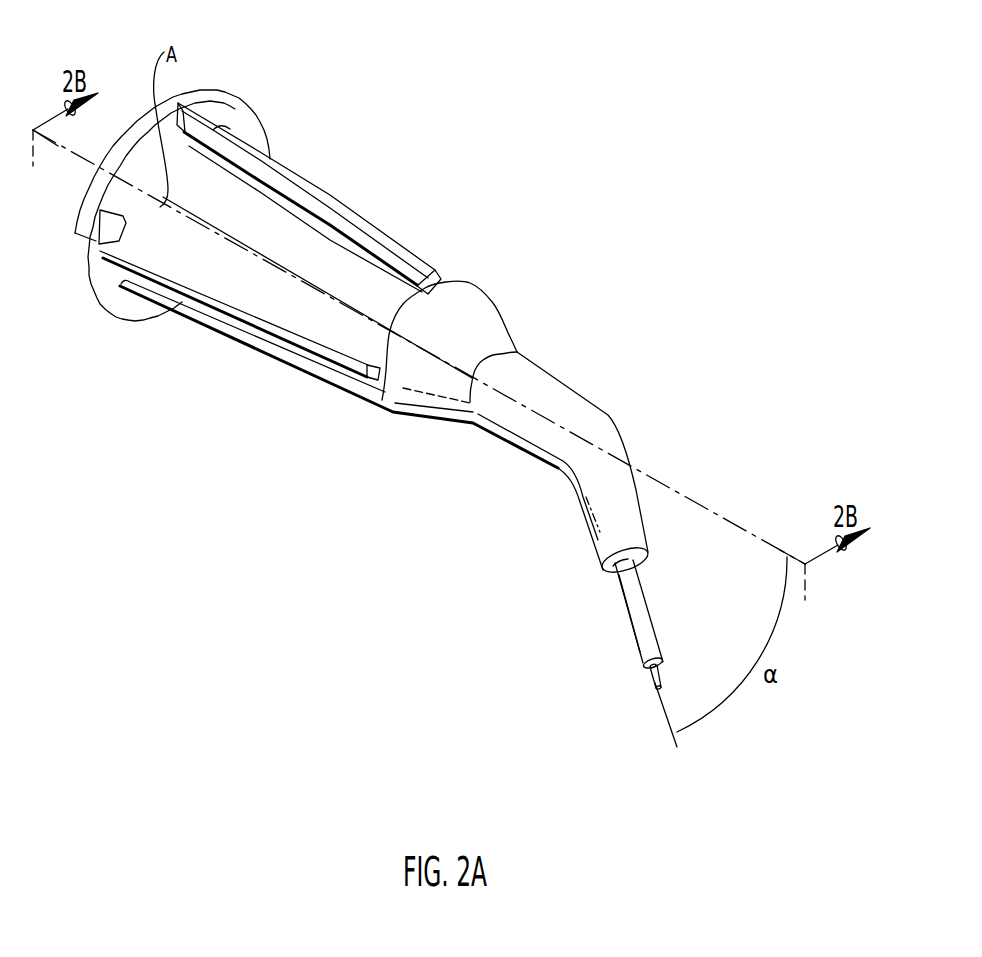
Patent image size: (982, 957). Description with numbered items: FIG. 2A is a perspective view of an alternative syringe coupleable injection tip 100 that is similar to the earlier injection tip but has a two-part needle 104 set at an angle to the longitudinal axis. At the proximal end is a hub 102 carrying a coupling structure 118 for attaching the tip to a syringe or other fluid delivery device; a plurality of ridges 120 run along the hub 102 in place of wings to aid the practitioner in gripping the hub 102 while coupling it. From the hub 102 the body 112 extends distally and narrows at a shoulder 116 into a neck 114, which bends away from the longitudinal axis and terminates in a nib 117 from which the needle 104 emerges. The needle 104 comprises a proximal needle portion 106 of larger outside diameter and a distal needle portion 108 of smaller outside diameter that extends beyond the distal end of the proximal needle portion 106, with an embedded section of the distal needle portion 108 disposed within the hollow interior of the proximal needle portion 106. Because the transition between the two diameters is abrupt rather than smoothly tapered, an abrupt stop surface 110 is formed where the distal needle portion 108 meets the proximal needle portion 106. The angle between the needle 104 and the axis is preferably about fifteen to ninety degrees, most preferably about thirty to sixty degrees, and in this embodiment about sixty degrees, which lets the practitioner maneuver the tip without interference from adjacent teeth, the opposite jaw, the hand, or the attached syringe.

The injection tip 100 is at (576, 149).
The hub 102 is at (366, 170).
The two-part needle 104 is at (640, 560).
The proximal needle portion 106 is at (628, 613).
The distal needle portion 108 is at (652, 683).
The abrupt stop surface 110 is at (649, 672).
The body 112 is at (360, 290).
The neck 114 is at (617, 410).
The shoulder 116 is at (472, 325).
The nib 117 is at (604, 571).
The coupling structure 118 is at (200, 88).
The ridges 120 is at (302, 215).